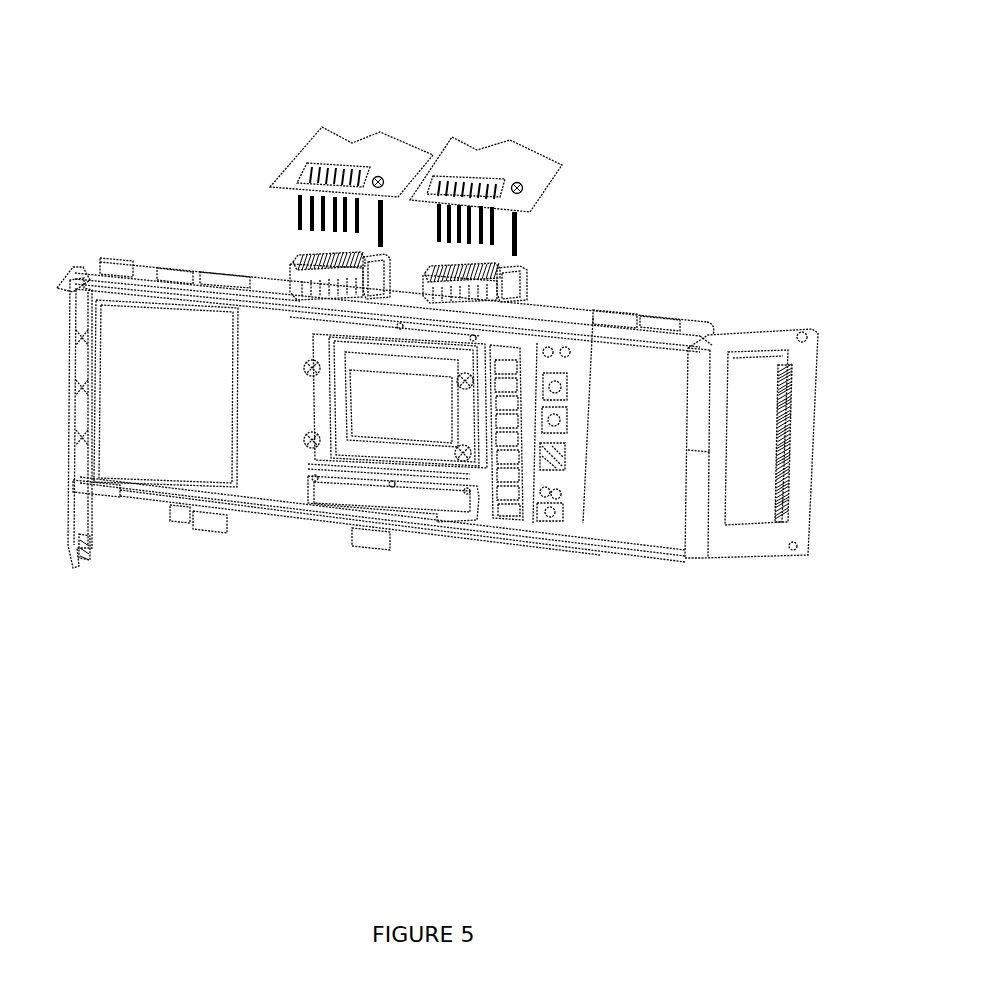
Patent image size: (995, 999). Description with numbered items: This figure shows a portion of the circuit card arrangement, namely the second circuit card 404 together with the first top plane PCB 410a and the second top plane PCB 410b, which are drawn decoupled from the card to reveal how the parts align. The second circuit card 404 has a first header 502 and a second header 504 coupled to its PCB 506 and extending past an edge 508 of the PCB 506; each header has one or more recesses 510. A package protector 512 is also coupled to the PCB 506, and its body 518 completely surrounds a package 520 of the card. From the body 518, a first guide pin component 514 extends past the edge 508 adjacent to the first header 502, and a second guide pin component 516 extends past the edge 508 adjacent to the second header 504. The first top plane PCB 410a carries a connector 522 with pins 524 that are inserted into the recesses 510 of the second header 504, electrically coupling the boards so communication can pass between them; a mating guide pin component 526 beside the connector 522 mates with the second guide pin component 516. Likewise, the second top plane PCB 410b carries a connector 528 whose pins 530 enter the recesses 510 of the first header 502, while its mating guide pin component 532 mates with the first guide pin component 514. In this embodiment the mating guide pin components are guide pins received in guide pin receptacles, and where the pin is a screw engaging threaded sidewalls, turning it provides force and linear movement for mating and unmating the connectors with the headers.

The second circuit card 404 is at (832, 460).
The first top plane PCB 410a is at (553, 165).
The second top plane PCB 410b is at (328, 142).
The first header 502 is at (310, 272).
The second header 504 is at (470, 283).
The PCB 506 is at (480, 503).
The edge 508 is at (578, 303).
The recesses 510 is at (290, 250).
The package protector 512 is at (328, 478).
The first guide pin component 514 is at (373, 285).
The second guide pin component 516 is at (512, 297).
The body 518 is at (303, 407).
The package 520 is at (388, 402).
The connector 522 is at (463, 185).
The pins 524 is at (500, 225).
The mating guide pin component 526 is at (517, 186).
The connector 528 is at (300, 168).
The pins 530 is at (298, 203).
The mating guide pin component 532 is at (380, 177).